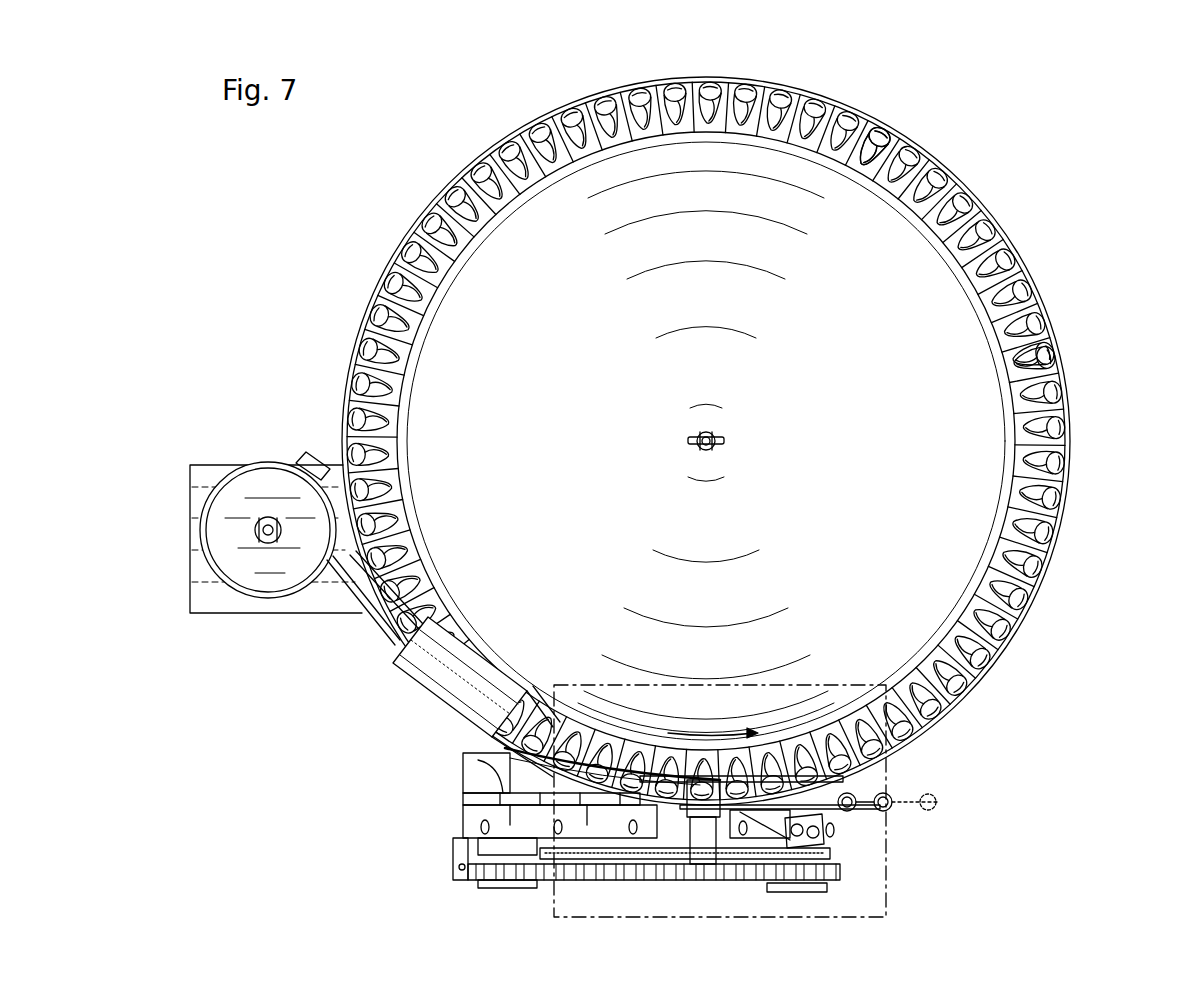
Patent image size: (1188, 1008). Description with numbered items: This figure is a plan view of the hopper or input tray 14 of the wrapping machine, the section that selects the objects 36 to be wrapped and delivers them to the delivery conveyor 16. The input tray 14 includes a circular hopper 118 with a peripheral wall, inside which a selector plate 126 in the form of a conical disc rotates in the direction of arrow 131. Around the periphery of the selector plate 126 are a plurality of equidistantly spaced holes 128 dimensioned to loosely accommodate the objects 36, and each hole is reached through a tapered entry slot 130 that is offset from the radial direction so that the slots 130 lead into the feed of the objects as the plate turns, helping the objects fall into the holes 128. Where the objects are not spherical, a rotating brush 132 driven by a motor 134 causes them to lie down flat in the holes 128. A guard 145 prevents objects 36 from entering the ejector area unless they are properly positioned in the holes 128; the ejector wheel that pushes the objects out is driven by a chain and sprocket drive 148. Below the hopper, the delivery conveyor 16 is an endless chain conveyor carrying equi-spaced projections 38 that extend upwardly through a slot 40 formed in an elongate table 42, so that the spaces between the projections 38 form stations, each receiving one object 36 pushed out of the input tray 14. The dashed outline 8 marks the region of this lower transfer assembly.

The input tray 14 is at (1024, 119).
The selector plate 126 is at (912, 262).
The circular hopper 118 is at (1028, 262).
The tapered entry slots 130 is at (1018, 325).
The holes 128 is at (1055, 390).
The motor 134 is at (262, 581).
The rotating brush 132 is at (428, 680).
The arrow 131 is at (718, 730).
The guard 145 is at (600, 742).
The projections 38 is at (493, 775).
The slot 40 is at (470, 797).
The elongate table 42 is at (462, 822).
The chain and sprocket drive 148 is at (598, 880).
The transfer station 8 is at (726, 803).
The objects 36 is at (880, 803).
The delivery conveyor 16 is at (957, 800).